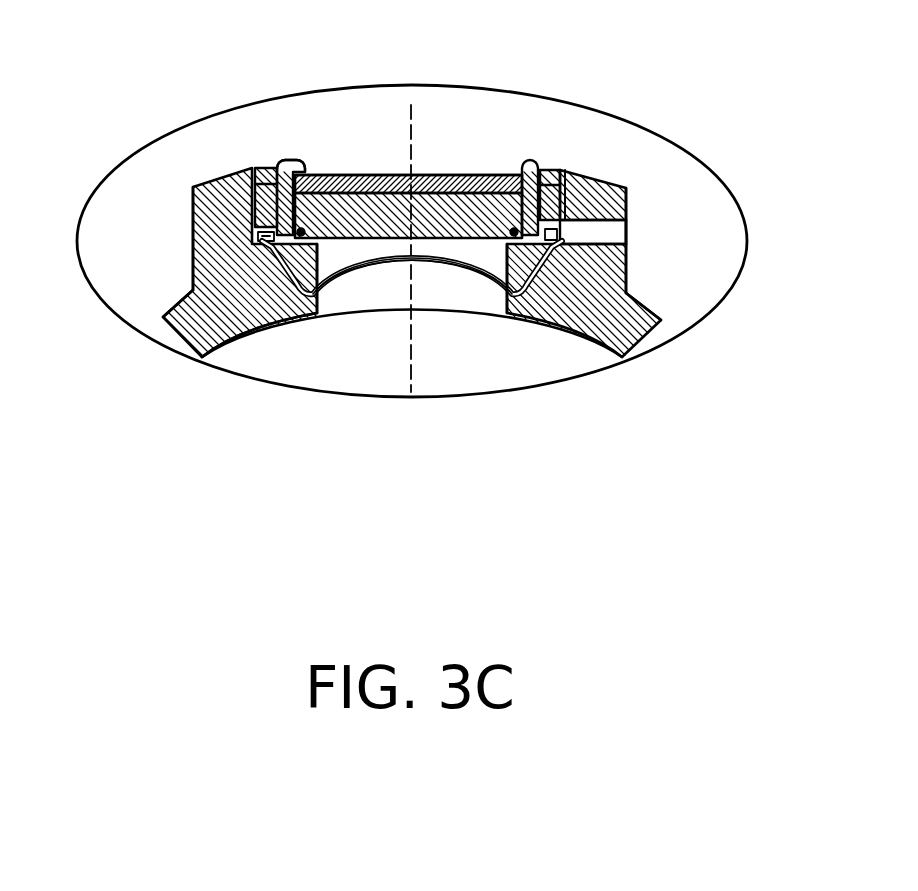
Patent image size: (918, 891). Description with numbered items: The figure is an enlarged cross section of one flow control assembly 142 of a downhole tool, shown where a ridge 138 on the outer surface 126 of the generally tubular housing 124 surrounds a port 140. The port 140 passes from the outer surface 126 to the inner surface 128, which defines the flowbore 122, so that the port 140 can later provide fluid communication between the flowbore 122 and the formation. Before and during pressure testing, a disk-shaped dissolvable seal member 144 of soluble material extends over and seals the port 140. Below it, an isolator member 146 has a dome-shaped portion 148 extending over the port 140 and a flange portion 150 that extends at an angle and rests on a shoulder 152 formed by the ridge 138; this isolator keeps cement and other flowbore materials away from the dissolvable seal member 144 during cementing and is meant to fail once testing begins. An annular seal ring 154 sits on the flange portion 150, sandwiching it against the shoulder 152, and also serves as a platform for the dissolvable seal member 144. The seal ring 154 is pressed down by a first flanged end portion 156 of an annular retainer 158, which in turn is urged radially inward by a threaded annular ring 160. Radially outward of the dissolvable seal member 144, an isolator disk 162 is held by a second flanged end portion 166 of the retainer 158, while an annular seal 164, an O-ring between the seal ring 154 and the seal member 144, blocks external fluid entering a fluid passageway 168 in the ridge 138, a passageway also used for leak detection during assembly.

The flowbore 122 is at (357, 378).
The housing 124 is at (160, 332).
The outer surface 126 is at (172, 310).
The inner surface 128 is at (238, 338).
The ridge 138 is at (627, 271).
The port 140 is at (337, 302).
The flow control assembly 142 is at (606, 150).
The dissolvable seal member 144 is at (470, 205).
The isolator member 146 is at (458, 302).
The dome-shaped portion 148 is at (357, 282).
The flange portion 150 is at (545, 318).
The shoulder 152 is at (527, 332).
The annular seal ring 154 is at (298, 262).
The first flanged end portion 156 is at (258, 238).
The annular retainer 158 is at (266, 152).
The threaded annular ring 160 is at (260, 200).
The isolator disk 162 is at (360, 175).
The annular seal 164 is at (512, 232).
The second flanged end portion 166 is at (290, 160).
The fluid passageway 168 is at (612, 232).